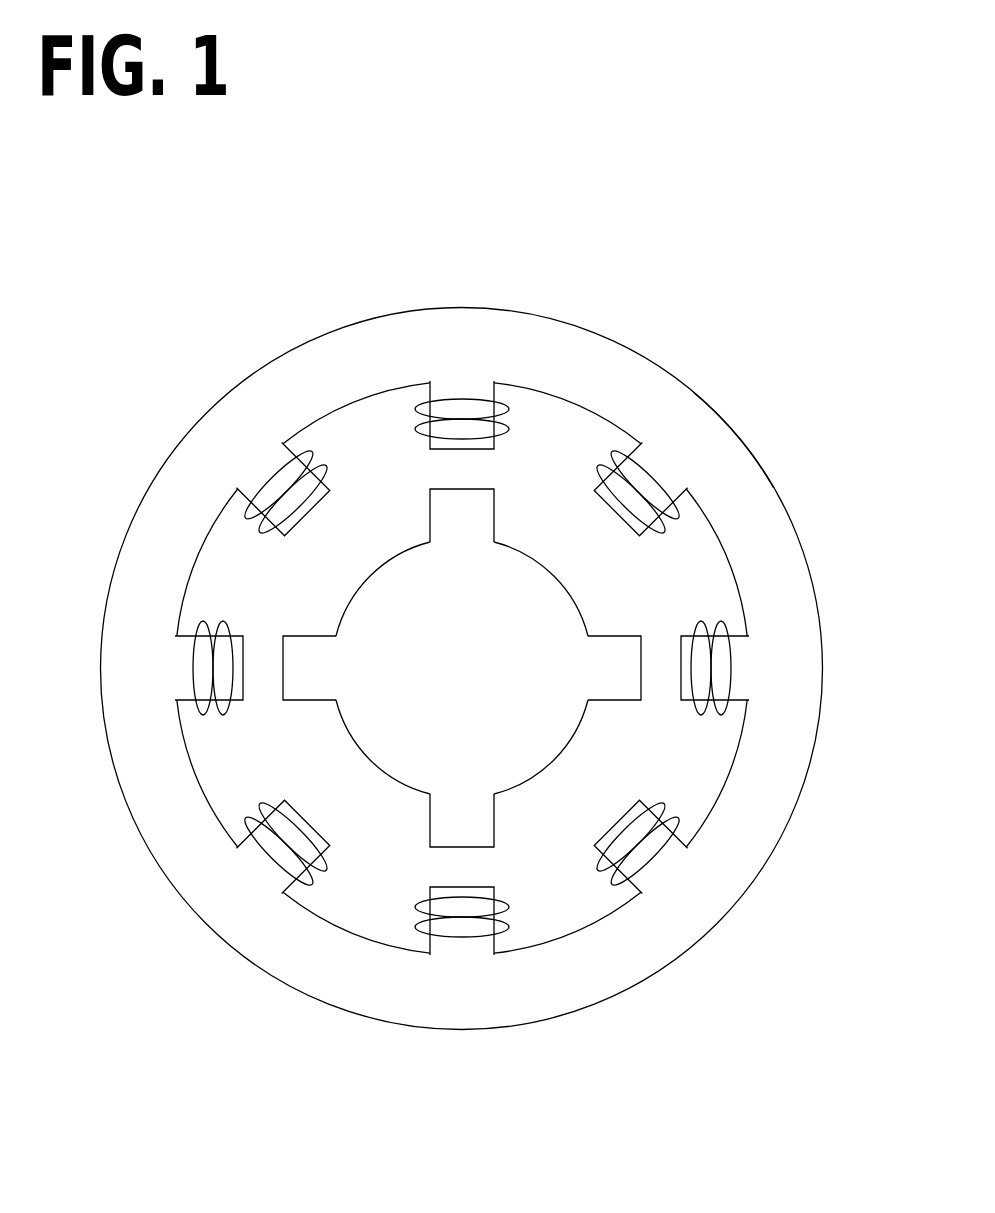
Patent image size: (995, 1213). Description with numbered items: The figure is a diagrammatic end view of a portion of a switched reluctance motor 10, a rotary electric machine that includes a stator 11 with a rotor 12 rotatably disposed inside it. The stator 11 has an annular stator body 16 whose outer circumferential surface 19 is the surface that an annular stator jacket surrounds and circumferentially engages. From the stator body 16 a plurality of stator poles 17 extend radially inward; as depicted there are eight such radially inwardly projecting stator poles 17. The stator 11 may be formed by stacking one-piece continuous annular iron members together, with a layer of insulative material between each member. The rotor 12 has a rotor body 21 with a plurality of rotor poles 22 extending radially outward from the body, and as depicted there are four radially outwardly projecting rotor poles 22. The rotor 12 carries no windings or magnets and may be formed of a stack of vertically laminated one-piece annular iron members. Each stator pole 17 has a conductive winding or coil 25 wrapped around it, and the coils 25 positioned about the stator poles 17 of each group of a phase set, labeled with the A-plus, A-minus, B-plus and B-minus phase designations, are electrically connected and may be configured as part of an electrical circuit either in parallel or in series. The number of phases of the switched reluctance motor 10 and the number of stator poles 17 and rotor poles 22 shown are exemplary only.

The switched reluctance motor 10 is at (616, 322).
The stator 11 is at (680, 400).
The rotor 12 is at (556, 592).
The stator body 16 is at (745, 873).
The stator poles 17 is at (496, 449).
The outer circumferential surface 19 is at (743, 442).
The rotor body 21 is at (447, 661).
The rotor poles 22 is at (496, 505).
The coil 25 is at (613, 457).